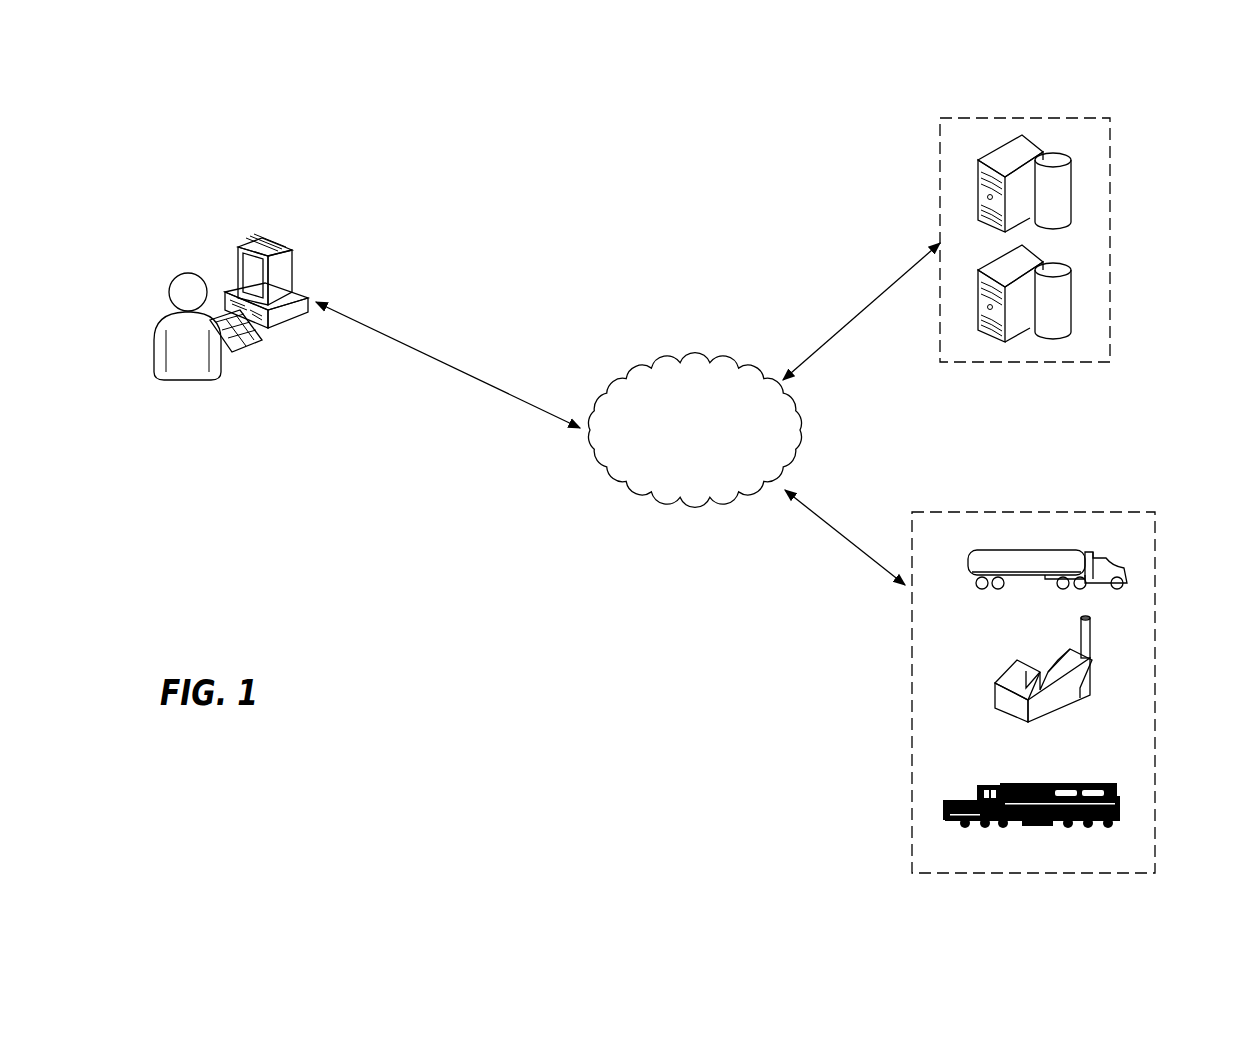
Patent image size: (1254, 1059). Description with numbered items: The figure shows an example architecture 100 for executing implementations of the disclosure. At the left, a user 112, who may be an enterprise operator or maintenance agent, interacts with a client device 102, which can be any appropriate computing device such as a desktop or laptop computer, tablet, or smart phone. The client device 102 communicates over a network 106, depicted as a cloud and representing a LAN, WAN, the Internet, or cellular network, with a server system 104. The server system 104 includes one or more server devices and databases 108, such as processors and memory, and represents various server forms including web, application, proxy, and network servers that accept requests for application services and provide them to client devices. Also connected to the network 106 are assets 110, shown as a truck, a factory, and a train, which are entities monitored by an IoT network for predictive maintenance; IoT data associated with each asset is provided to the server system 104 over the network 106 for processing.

The example architecture 100 is at (545, 118).
The client device 102 is at (236, 252).
The server system 104 is at (1110, 241).
The network 106 is at (696, 356).
The server devices and databases 108 is at (978, 172).
The assets 110 is at (1155, 693).
The user 112 is at (187, 372).